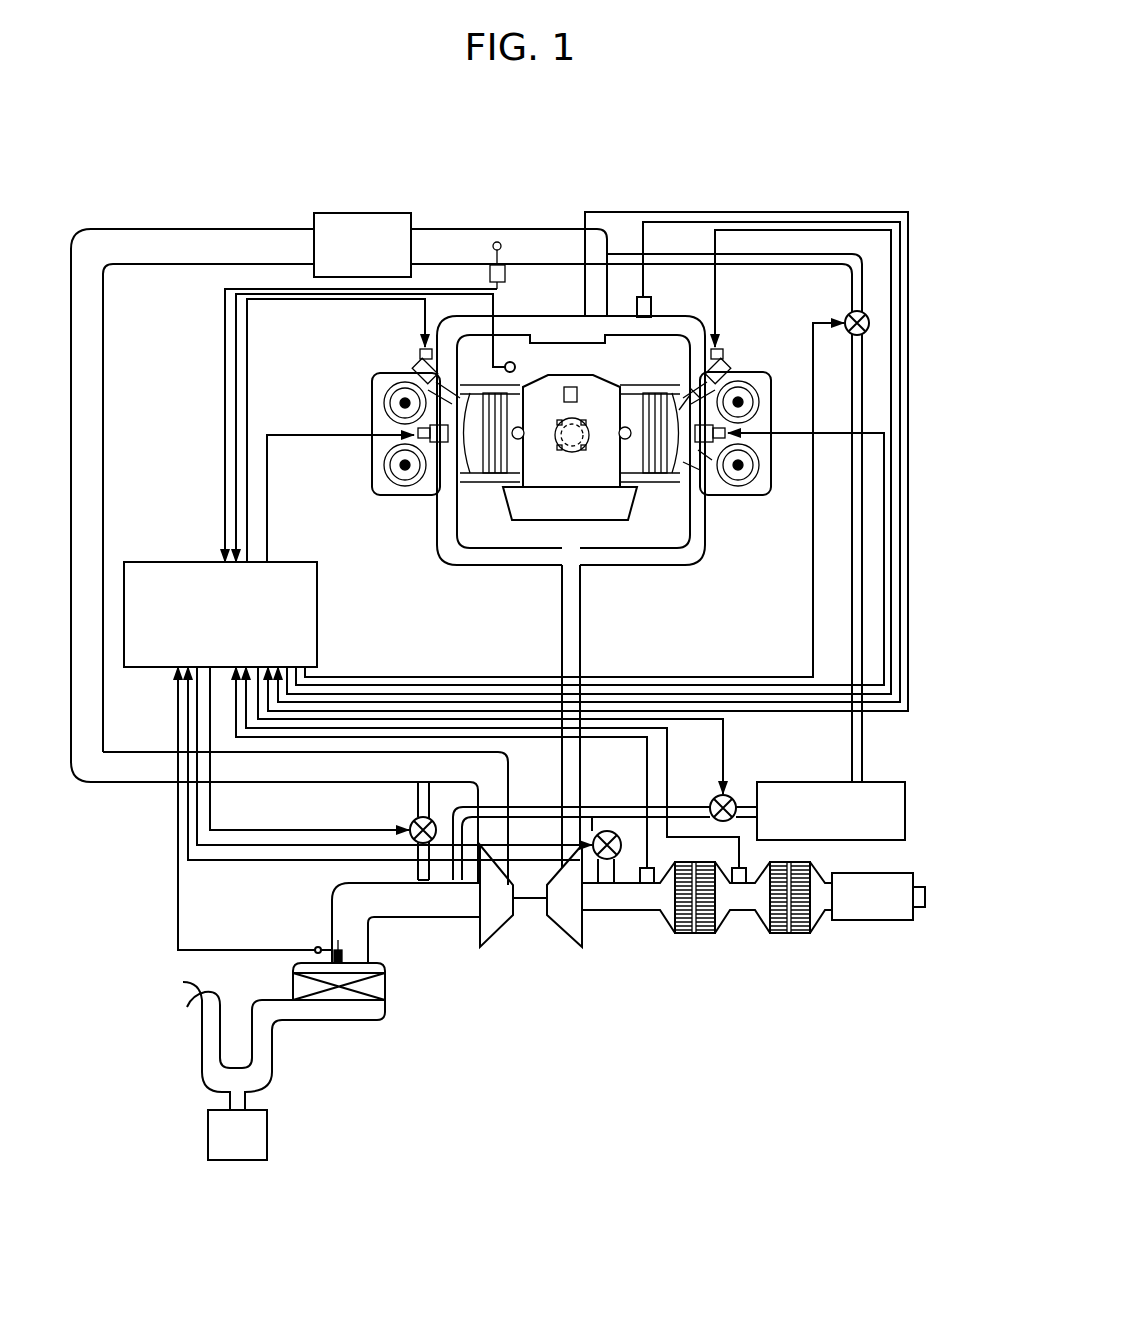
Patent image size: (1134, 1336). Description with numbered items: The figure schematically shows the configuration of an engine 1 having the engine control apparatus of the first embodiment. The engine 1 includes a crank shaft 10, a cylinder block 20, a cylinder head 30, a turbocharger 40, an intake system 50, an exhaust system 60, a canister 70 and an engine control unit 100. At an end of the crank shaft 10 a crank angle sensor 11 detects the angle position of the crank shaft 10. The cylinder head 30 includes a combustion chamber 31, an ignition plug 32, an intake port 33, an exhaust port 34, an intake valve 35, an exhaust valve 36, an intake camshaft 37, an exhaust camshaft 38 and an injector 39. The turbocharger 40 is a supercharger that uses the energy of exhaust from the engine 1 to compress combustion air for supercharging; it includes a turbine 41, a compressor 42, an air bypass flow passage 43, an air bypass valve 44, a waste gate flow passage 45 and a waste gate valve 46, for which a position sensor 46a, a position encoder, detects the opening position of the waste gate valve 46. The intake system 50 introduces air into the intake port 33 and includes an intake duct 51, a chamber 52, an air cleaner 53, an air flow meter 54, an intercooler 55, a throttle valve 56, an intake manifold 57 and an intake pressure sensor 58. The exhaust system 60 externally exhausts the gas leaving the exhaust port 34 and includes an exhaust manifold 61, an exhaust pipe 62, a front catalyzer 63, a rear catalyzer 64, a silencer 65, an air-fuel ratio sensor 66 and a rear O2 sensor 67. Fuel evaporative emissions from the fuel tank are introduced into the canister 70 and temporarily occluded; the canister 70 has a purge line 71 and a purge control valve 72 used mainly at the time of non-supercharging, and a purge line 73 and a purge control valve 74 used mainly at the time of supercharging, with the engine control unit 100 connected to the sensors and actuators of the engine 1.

The engine 1 is at (675, 373).
The crank shaft 10 is at (573, 447).
The crank angle sensor 11 is at (578, 400).
The cylinder block 20 is at (540, 488).
The cylinder head 30 is at (839, 310).
The combustion chamber 31 is at (679, 423).
The ignition plug 32 is at (713, 428).
The intake port 33 is at (693, 391).
The exhaust port 34 is at (692, 467).
The intake valve 35 is at (716, 360).
The exhaust valve 36 is at (704, 457).
The intake camshaft 37 is at (738, 402).
The exhaust camshaft 38 is at (738, 465).
The injector 39 is at (727, 363).
The turbocharger 40 is at (554, 988).
The turbine 41 is at (563, 928).
The compressor 42 is at (495, 928).
The air bypass flow passage 43 is at (418, 868).
The air bypass valve 44 is at (408, 826).
The waste gate flow passage 45 is at (592, 827).
The waste gate valve 46 is at (612, 832).
The position sensor 46a is at (598, 867).
The intake system 50 is at (118, 210).
The intake duct 51 is at (333, 917).
The chamber 52 is at (208, 1130).
The air cleaner 53 is at (347, 1001).
The air flow meter 54 is at (338, 960).
The intercooler 55 is at (322, 213).
The throttle valve 56 is at (497, 243).
The intake manifold 57 is at (528, 316).
The intake pressure sensor 58 is at (637, 299).
The exhaust system 60 is at (782, 996).
The exhaust manifold 61 is at (579, 669).
The exhaust pipe 62 is at (609, 910).
The front catalyzer 63 is at (700, 933).
The rear catalyzer 64 is at (792, 933).
The silencer 65 is at (873, 920).
The air-fuel ratio sensor 66 is at (647, 880).
The rear O2 sensor 67 is at (739, 880).
The canister 70 is at (905, 807).
The purge line 71 is at (863, 522).
The purge control valve 72 is at (868, 323).
The purge line 73 is at (452, 866).
The purge control valve 74 is at (726, 803).
The engine control unit 100 is at (175, 562).